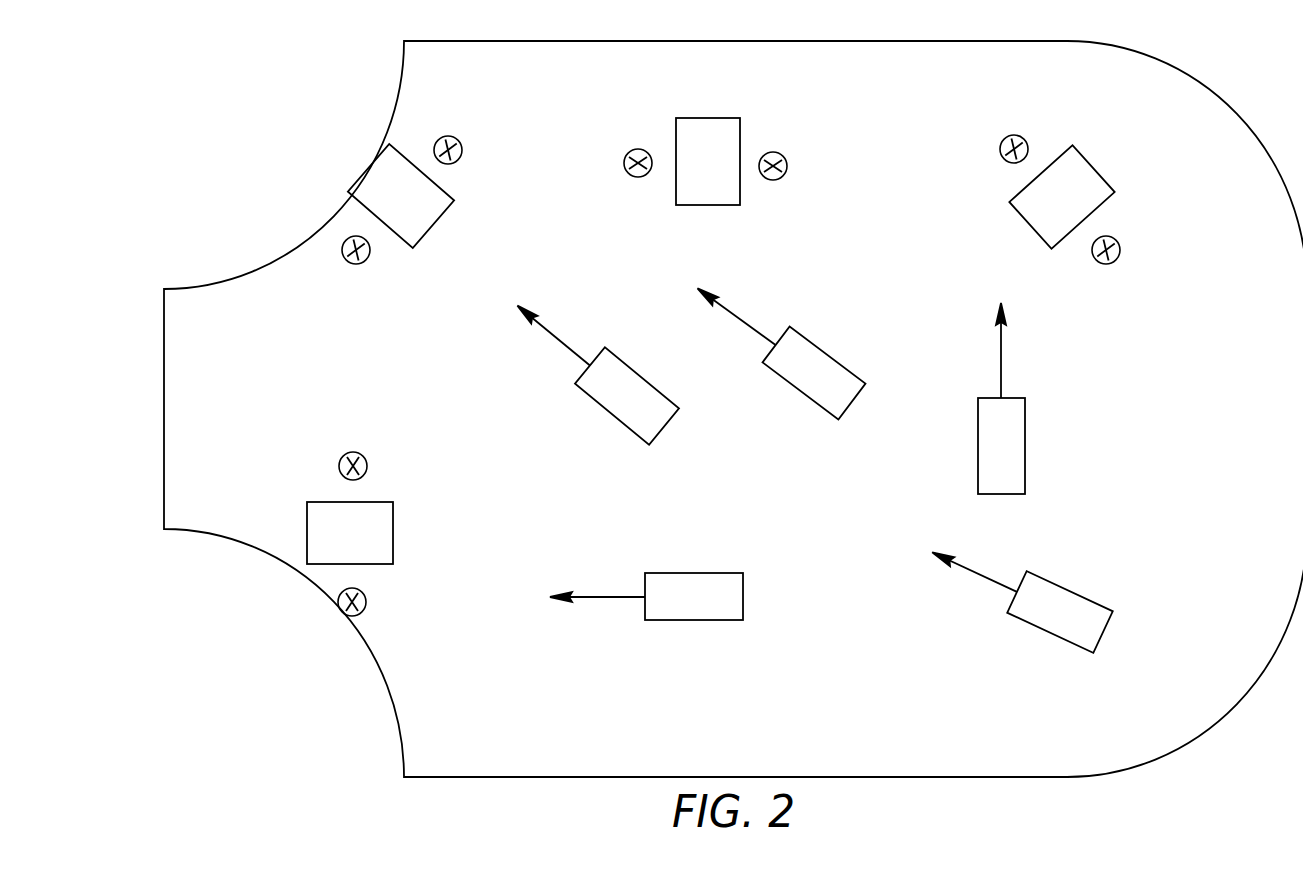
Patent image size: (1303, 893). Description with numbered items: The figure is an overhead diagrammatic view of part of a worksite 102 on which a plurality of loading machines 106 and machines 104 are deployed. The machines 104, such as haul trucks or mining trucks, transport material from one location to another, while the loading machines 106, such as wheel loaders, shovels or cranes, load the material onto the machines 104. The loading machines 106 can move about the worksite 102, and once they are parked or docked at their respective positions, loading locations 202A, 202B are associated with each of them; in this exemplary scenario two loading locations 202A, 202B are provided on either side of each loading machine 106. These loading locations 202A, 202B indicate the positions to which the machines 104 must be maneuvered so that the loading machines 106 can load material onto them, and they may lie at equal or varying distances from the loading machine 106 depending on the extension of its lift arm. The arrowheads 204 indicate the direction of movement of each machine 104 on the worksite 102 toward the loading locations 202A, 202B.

The worksite 102 is at (1127, 50).
The machine 104 is at (616, 410).
The loading machine 106 is at (384, 210).
The loading location 202A is at (342, 248).
The loading location 202B is at (448, 136).
The arrowhead 204 is at (558, 338).